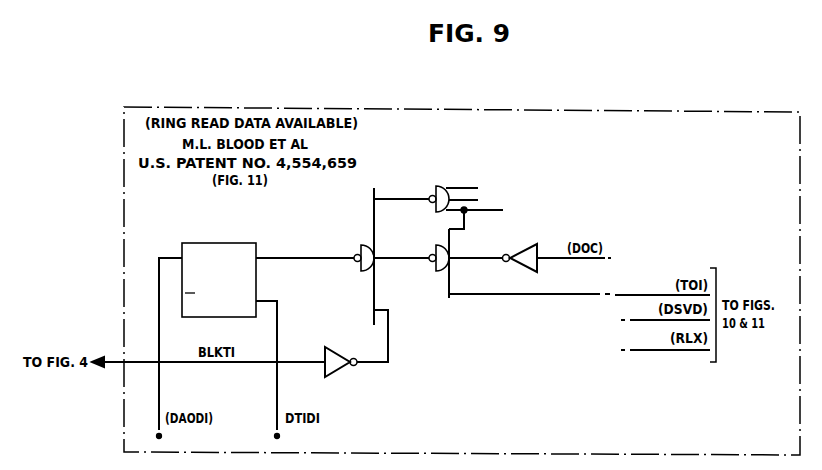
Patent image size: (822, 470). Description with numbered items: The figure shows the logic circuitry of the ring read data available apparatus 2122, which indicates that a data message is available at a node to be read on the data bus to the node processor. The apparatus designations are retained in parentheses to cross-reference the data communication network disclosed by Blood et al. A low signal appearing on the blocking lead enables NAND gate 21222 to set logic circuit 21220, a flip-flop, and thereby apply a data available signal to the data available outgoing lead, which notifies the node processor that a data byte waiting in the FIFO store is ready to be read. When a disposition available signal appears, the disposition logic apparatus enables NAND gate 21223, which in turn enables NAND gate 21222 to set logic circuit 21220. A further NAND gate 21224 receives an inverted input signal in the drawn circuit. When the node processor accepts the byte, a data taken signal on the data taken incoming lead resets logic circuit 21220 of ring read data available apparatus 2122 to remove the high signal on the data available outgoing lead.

The ring read data available apparatus 2122 is at (718, 126).
The logic circuit 21220 is at (220, 252).
The NAND gate 21222 is at (349, 246).
The NAND gate 21223 is at (439, 188).
The NAND gate 21224 is at (421, 268).